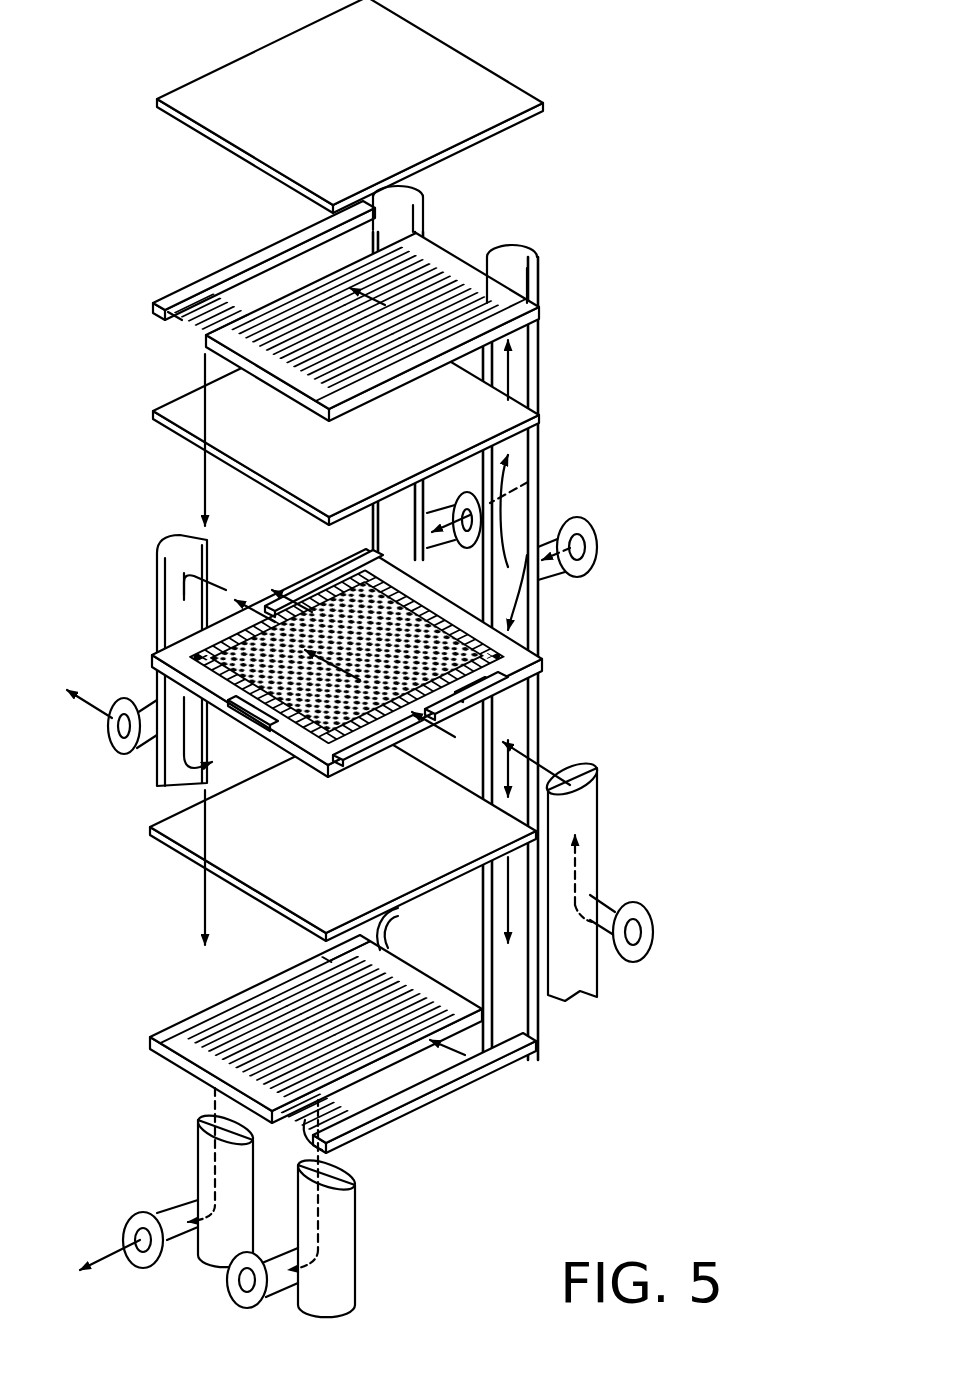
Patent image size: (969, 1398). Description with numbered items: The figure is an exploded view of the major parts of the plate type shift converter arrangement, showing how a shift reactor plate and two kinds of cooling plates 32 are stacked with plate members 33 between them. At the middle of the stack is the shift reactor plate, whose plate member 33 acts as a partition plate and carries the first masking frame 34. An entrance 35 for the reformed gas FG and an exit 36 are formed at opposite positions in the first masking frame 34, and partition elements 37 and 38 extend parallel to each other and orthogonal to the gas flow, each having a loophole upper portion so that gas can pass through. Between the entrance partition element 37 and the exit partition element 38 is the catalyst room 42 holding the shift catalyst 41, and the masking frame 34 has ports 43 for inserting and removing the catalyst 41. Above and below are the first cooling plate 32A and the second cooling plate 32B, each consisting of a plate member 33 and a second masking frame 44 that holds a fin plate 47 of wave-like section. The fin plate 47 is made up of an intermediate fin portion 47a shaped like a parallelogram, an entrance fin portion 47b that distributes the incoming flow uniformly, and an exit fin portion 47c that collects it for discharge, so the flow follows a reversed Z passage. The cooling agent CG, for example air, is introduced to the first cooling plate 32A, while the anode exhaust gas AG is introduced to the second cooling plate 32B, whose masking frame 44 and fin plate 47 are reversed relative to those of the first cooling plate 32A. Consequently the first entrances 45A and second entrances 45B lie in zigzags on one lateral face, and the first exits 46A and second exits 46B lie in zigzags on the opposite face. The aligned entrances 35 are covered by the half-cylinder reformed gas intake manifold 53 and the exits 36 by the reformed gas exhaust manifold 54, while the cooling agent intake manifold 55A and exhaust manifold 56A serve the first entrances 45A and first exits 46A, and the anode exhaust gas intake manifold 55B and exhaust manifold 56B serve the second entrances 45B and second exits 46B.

The cooling plate 32 is at (332, 647).
The first cooling plate 32A is at (165, 362).
The second cooling plate 32B is at (445, 1103).
The plate member 33 is at (222, 70).
The first masking frame 34 is at (535, 656).
The entrance 35 is at (418, 736).
The exit 36 is at (255, 605).
The entrance partition element 37 is at (520, 705).
The exit partition element 38 is at (345, 598).
The shift catalyst 41 is at (380, 738).
The catalyst room 42 is at (505, 688).
The port 43 is at (252, 718).
The second masking frame 44 is at (170, 302).
The first entrance 45A is at (500, 298).
The second entrance 45B is at (388, 918).
The first exit 46A is at (172, 318).
The second exit 46B is at (318, 1150).
The fin plate 47 is at (362, 679).
The intermediate fin portion 47a is at (415, 275).
The entrance fin portion 47b is at (540, 328).
The exit fin portion 47c is at (247, 275).
The reformed gas intake manifold 53 is at (592, 852).
The reformed gas exhaust manifold 54 is at (172, 545).
The cooling agent intake manifold 55A is at (540, 293).
The anode exhaust gas intake manifold 55B is at (423, 200).
The cooling agent exhaust manifold 56A is at (204, 1265).
The anode exhaust gas exhaust manifold 56B is at (350, 1288).
The anode exhaust gas AG is at (528, 482).
The cooling agent CG is at (597, 545).
The reformed gas FG is at (640, 940).